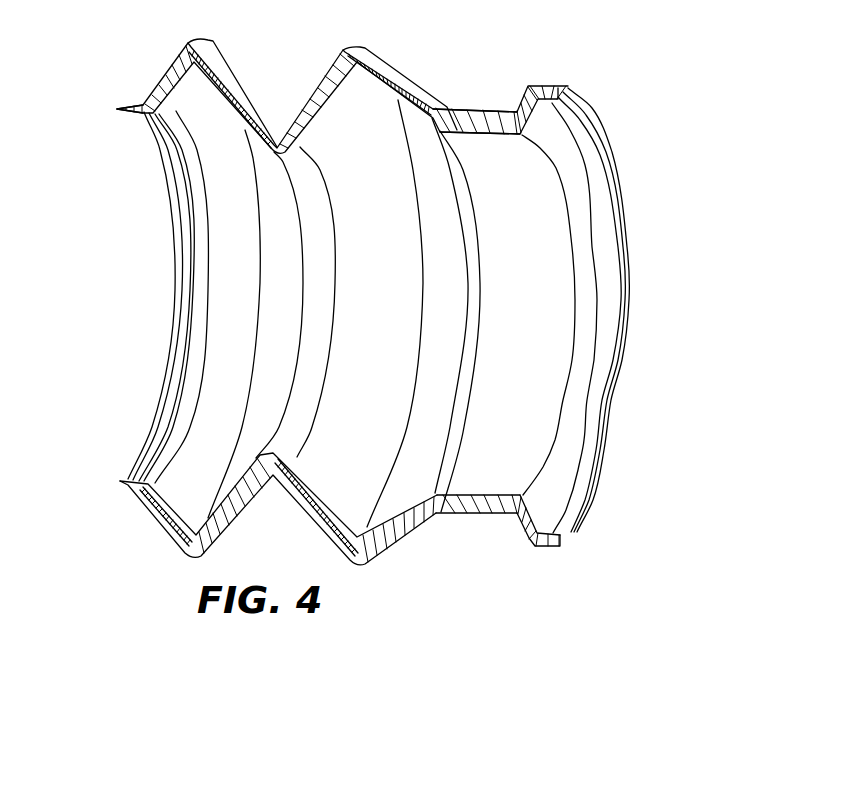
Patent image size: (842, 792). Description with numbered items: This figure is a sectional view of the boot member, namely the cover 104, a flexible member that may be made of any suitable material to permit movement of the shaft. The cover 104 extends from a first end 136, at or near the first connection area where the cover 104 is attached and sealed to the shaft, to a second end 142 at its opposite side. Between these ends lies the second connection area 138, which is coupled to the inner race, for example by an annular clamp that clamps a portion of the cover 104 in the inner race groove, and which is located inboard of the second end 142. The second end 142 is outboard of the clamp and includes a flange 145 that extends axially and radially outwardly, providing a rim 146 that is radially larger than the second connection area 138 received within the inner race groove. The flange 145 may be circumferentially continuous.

The cover 104 is at (409, 548).
The first end 136 is at (123, 483).
The second connection area 138 is at (473, 500).
The second end 142 is at (609, 405).
The flange 145 is at (543, 547).
The rim 146 is at (574, 529).